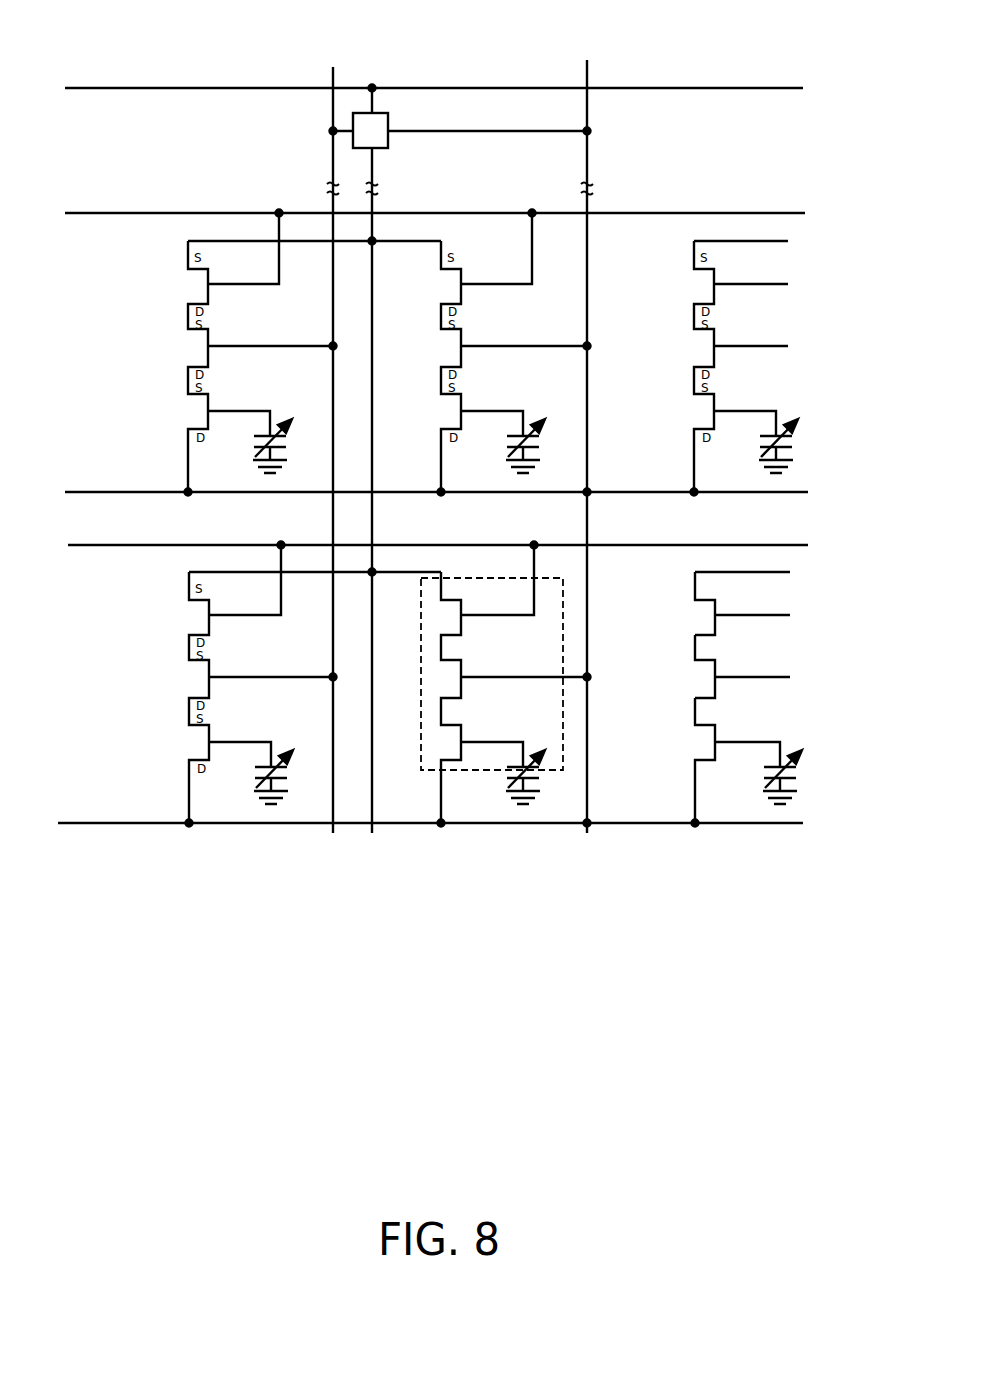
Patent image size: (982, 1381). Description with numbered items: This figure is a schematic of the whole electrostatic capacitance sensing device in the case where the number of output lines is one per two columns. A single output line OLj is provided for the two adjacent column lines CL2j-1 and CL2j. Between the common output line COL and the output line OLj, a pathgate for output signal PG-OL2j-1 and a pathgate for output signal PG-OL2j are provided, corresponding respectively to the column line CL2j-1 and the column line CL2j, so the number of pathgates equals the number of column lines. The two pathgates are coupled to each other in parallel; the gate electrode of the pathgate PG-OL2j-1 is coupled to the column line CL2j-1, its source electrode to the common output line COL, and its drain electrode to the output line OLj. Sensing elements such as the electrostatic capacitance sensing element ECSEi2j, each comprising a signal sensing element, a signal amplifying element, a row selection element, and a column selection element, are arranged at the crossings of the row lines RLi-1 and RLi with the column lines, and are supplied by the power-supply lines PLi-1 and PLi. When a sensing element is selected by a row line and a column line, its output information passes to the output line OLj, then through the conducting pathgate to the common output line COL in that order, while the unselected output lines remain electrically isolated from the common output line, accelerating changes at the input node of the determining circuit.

The common output line COL is at (466, 73).
The column line CL2j-1 is at (242, 440).
The column line CL2j is at (563, 438).
The output line OLj is at (377, 496).
The pathgate for output signal PG-OL2j is at (400, 95).
The pathgate for output signal PG-OL2j-1 is at (348, 119).
The row line RLi-1 is at (424, 186).
The row line RLi is at (435, 535).
The power-supply line PLi-1 is at (420, 458).
The power-supply line PLi is at (430, 813).
The electrostatic capacitance sensing element ECSEi2j is at (468, 773).